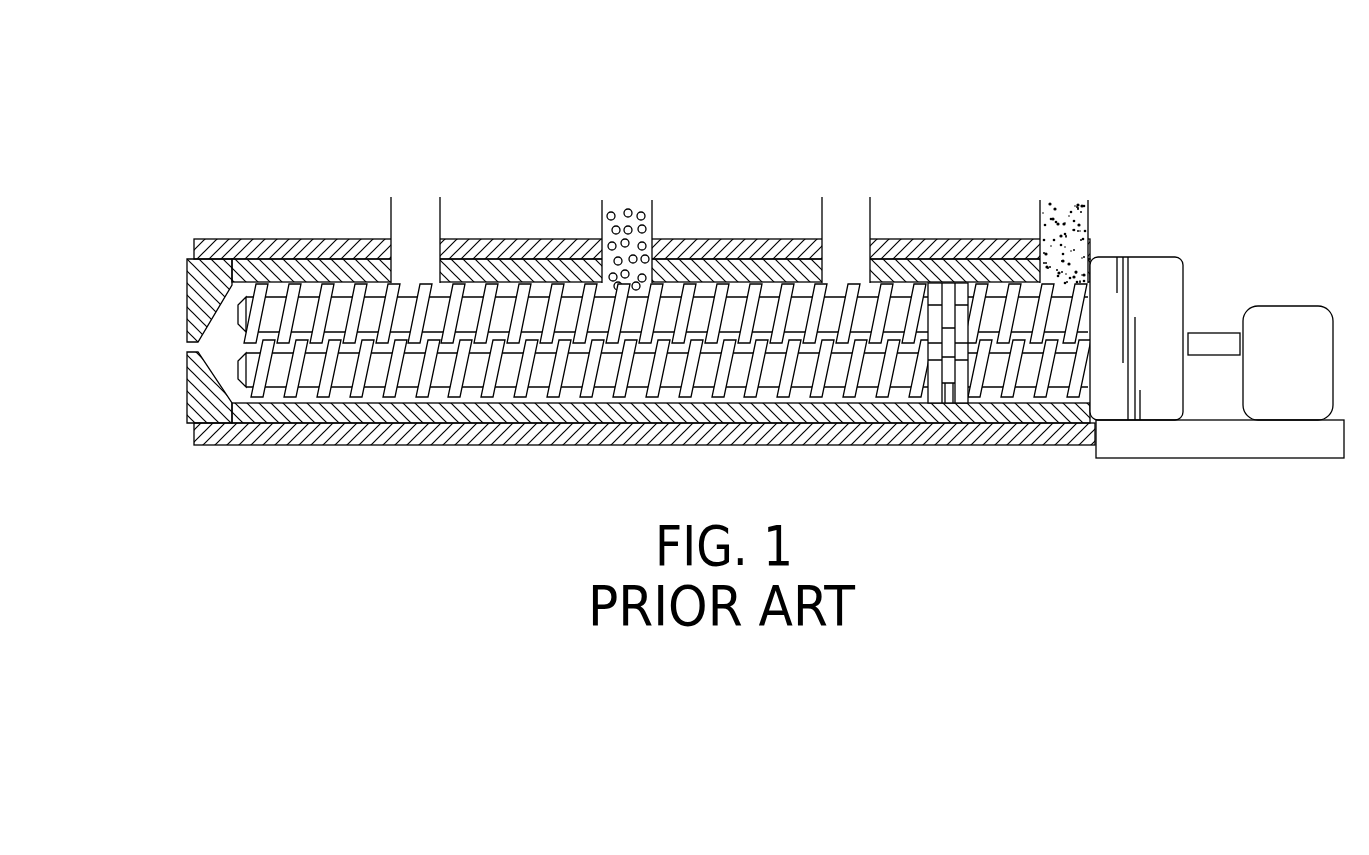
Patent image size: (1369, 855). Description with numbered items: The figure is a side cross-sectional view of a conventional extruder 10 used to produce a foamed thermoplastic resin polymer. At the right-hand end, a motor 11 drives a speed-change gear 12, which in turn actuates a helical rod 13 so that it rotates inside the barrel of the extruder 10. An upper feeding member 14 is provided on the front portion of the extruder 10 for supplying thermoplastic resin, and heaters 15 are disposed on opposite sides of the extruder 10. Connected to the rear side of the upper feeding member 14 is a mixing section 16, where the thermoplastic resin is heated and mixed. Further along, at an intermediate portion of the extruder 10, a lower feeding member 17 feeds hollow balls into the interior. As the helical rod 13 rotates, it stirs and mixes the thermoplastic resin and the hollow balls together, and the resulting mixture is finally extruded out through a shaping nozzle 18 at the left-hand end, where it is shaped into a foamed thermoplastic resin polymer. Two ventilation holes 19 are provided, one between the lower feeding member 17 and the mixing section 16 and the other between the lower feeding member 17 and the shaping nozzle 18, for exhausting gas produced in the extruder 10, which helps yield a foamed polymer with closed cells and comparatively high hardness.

The extruder 10 is at (1236, 84).
The motor 11 is at (1292, 305).
The speed-change gear 12 is at (1142, 257).
The helical rod 13 is at (1057, 387).
The upper feeding member 14 is at (1060, 195).
The heaters 15 is at (968, 273).
The mixing section 16 is at (947, 385).
The lower feeding member 17 is at (625, 200).
The shaping nozzle 18 is at (188, 346).
The ventilation holes 19 is at (413, 213).